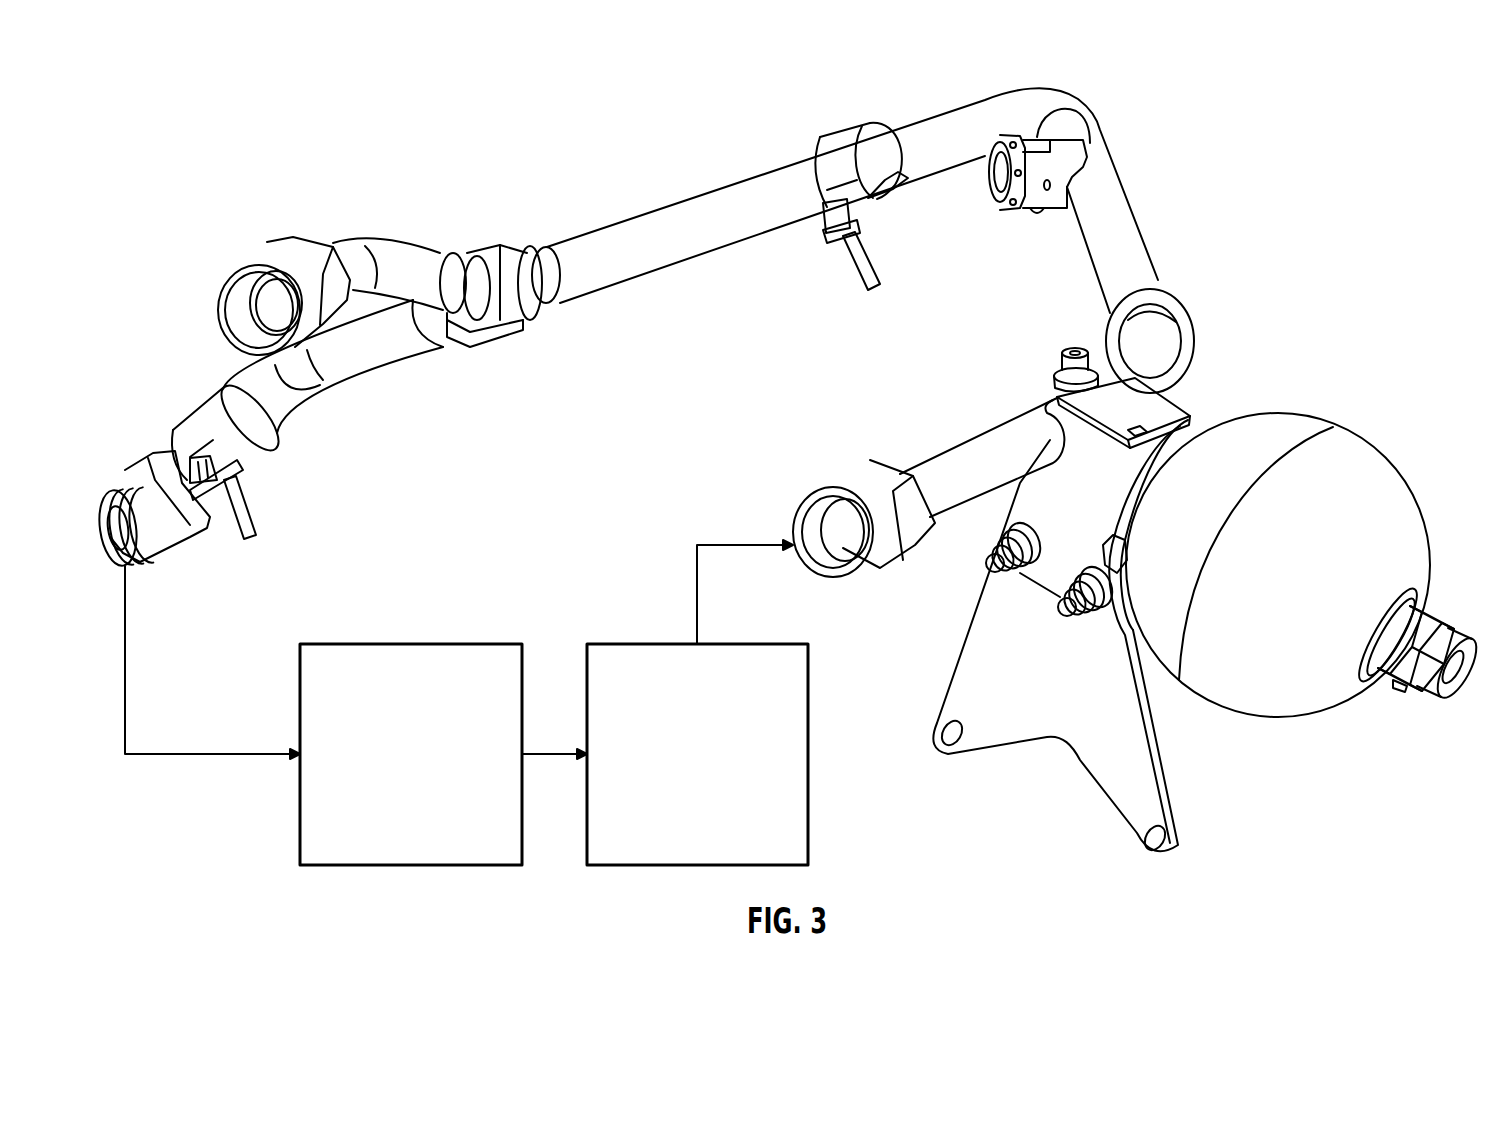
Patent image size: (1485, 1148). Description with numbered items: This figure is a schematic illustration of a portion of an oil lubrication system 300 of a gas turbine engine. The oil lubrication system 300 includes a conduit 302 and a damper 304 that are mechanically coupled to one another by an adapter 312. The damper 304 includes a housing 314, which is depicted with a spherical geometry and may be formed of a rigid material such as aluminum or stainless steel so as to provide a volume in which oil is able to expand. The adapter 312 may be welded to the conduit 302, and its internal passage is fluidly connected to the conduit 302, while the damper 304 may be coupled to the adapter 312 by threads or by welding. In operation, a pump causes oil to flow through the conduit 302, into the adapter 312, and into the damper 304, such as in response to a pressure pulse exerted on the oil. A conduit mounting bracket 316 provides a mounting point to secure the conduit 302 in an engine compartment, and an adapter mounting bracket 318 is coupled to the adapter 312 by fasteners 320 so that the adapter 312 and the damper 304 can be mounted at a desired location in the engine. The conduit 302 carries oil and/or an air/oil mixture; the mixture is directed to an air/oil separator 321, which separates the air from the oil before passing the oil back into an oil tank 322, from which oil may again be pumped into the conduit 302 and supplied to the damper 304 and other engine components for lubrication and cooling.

The oil lubrication system 300 is at (206, 98).
The conduit 302 is at (1137, 240).
The damper 304 is at (1381, 468).
The adapter 312 is at (1167, 417).
The housing 314 is at (1285, 702).
The conduit mounting bracket 316 is at (830, 152).
The adapter mounting bracket 318 is at (1012, 735).
The fasteners 320 is at (985, 572).
The air/oil separator 321 is at (411, 754).
The oil tank 322 is at (697, 754).